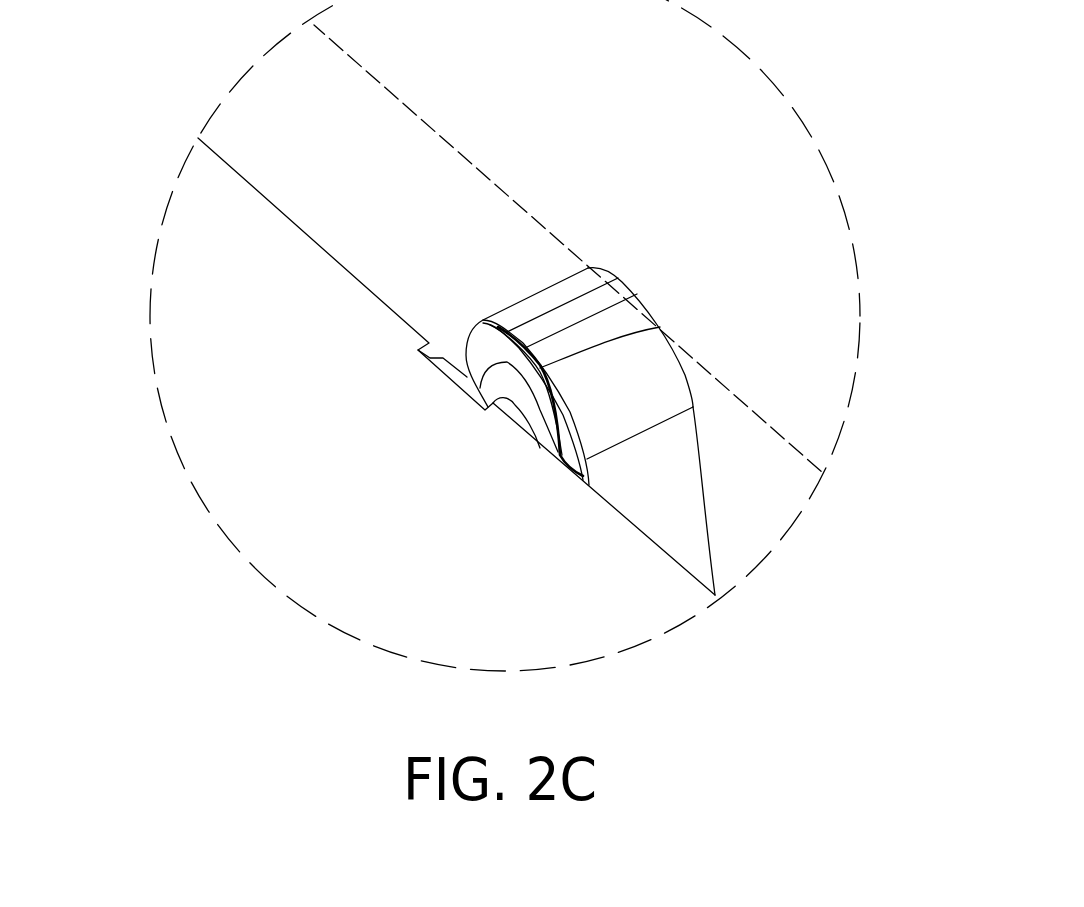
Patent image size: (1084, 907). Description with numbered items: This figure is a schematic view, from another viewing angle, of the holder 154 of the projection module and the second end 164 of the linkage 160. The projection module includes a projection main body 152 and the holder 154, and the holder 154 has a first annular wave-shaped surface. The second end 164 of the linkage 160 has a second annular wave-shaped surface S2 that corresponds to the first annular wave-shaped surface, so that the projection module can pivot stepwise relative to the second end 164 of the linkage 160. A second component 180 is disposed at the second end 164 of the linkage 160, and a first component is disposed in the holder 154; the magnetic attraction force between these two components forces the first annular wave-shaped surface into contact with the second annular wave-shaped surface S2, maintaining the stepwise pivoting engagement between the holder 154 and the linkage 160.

The projection main body 152 is at (247, 73).
The holder 154 is at (198, 163).
The second annular wave-shaped surface S2 is at (660, 327).
The second end of the linkage 164 is at (652, 377).
The second component 180 is at (537, 422).
The linkage 160 is at (670, 510).